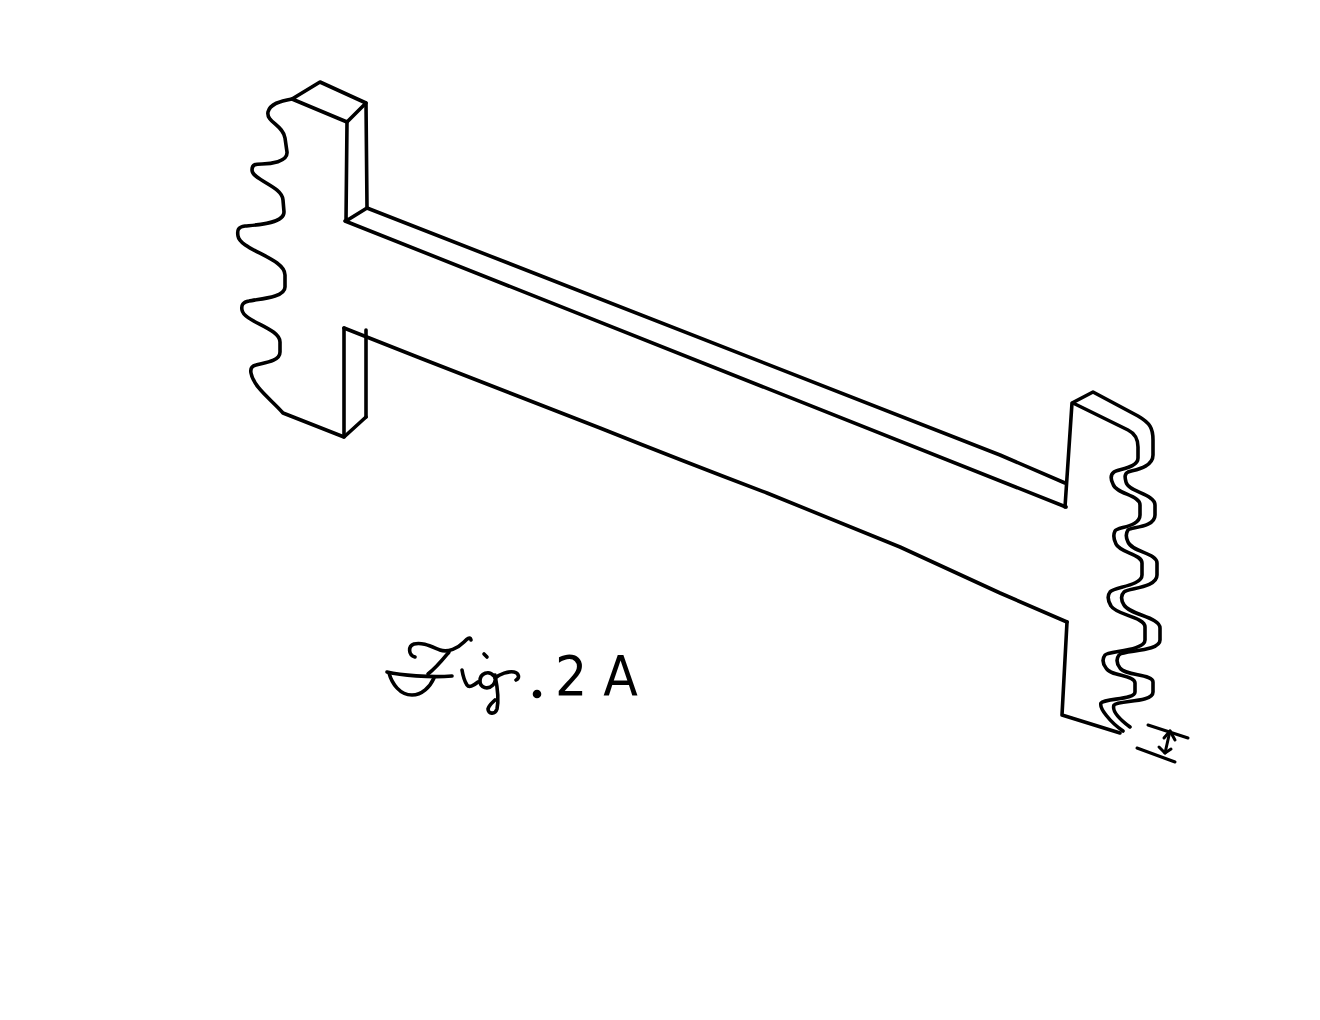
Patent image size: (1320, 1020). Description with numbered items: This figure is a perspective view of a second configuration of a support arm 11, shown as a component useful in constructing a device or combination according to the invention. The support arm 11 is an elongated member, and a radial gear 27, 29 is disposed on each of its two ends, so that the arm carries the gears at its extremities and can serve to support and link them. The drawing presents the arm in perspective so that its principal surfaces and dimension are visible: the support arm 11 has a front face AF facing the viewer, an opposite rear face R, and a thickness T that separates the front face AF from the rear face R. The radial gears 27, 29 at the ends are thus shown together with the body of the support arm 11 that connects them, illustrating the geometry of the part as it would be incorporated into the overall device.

The support arm 11 is at (607, 397).
The radial gear 27 is at (297, 382).
The radial gear 29 is at (1100, 440).
The rear face R is at (973, 447).
The front face AF is at (973, 557).
The thickness T is at (1198, 752).